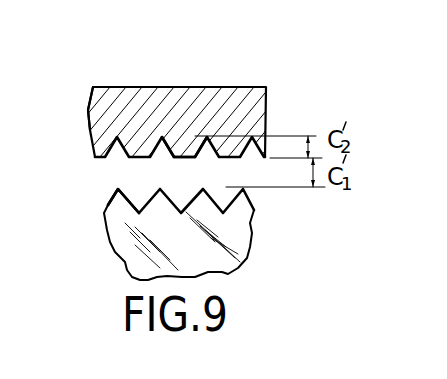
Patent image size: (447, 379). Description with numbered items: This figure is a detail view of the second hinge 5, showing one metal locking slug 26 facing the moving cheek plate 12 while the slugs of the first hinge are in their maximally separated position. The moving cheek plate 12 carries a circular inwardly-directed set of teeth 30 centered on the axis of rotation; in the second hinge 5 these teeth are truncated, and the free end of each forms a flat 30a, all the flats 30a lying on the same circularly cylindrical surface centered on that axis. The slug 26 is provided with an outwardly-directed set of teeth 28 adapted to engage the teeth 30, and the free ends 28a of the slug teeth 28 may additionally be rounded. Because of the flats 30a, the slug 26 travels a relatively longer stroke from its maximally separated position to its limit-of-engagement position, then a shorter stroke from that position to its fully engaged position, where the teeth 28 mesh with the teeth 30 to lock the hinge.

The second hinge 5 is at (99, 77).
The moving cheek plate 12 is at (233, 100).
The set of teeth 30 is at (120, 152).
The flat 30a is at (183, 157).
The locking slug 26 is at (238, 225).
The set of teeth 28 is at (232, 198).
The free end 28a is at (112, 203).